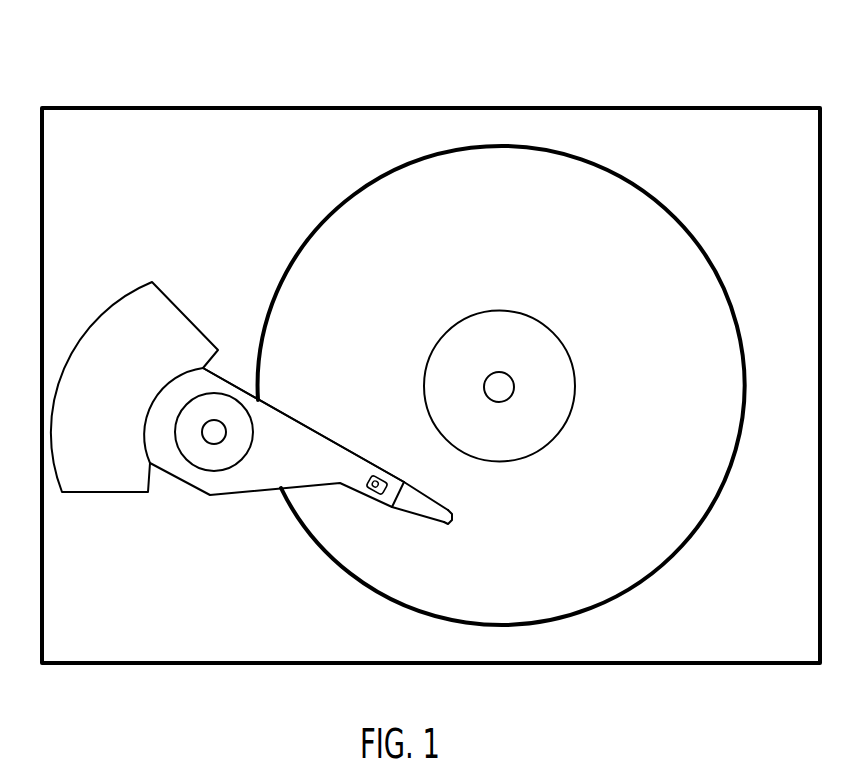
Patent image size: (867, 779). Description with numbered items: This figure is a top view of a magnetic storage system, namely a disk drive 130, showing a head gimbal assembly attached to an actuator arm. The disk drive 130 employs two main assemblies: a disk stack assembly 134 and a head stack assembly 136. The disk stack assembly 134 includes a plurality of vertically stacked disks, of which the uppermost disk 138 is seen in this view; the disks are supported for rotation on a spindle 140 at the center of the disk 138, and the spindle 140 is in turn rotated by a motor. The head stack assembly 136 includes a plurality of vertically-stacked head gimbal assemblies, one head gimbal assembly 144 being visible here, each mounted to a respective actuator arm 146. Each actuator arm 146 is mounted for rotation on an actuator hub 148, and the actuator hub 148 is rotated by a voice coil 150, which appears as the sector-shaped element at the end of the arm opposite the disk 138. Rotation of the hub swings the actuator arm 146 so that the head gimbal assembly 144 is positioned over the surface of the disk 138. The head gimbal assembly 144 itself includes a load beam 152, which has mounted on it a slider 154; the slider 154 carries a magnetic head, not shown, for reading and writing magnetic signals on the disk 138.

The disk drive 130 is at (631, 70).
The disk stack assembly 134 is at (661, 188).
The head stack assembly 136 is at (356, 445).
The disk 138 is at (655, 360).
The spindle 140 is at (515, 375).
The head gimbal assembly 144 is at (404, 521).
The actuator arm 146 is at (303, 422).
The actuator hub 148 is at (209, 454).
The voice coil 150 is at (188, 320).
The load beam 152 is at (425, 490).
The slider 154 is at (452, 525).